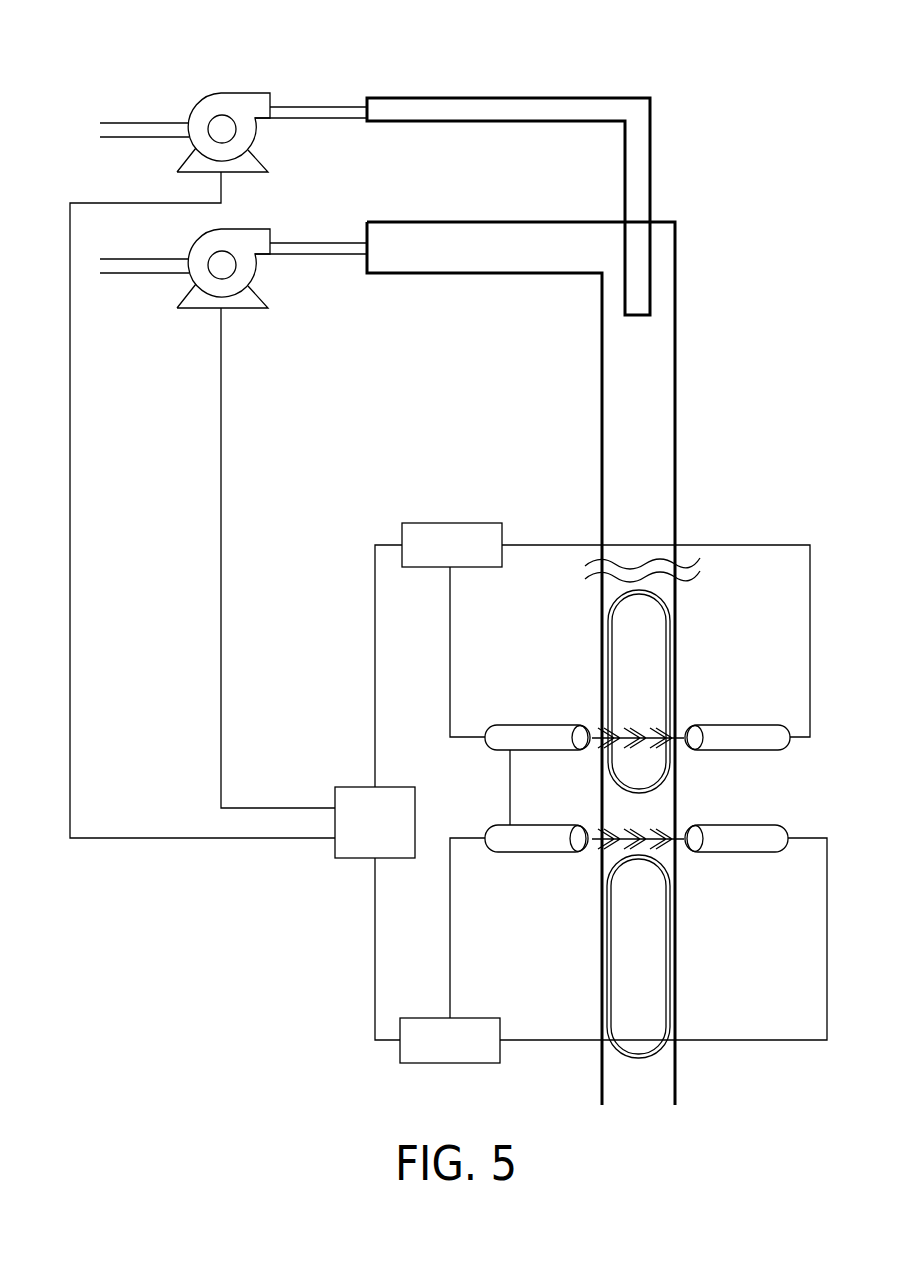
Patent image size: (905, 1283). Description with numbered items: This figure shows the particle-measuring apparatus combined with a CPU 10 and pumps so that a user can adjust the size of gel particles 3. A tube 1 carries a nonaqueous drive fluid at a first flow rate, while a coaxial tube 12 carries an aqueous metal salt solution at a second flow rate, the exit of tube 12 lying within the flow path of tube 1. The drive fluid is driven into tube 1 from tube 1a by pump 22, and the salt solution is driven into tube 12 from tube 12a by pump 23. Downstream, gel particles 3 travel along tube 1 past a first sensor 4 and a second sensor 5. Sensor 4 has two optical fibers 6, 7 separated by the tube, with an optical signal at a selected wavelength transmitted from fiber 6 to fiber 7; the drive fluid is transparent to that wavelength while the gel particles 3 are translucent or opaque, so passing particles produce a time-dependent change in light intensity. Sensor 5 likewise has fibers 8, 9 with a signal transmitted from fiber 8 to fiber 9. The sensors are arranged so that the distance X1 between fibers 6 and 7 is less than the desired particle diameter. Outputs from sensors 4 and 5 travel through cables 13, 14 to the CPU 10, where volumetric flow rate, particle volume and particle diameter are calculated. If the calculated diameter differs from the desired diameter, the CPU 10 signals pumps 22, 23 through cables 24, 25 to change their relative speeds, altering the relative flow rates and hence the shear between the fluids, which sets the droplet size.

The tube 1 is at (676, 398).
The tube 1a is at (128, 275).
The gel particles 3 is at (676, 630).
The first sensor 4 is at (487, 568).
The second sensor 5 is at (485, 1018).
The optical fiber 6 is at (545, 725).
The optical fiber 7 is at (752, 725).
The optical fiber 8 is at (556, 825).
The optical fiber 9 is at (774, 825).
The CPU 10 is at (340, 860).
The tube 12 is at (653, 148).
The tube 12a is at (135, 122).
The cable 13 is at (375, 568).
The cable 14 is at (375, 948).
The pump 22 is at (250, 310).
The pump 23 is at (240, 93).
The cable 24 is at (222, 668).
The cable 25 is at (70, 650).
The distance X1 is at (510, 797).